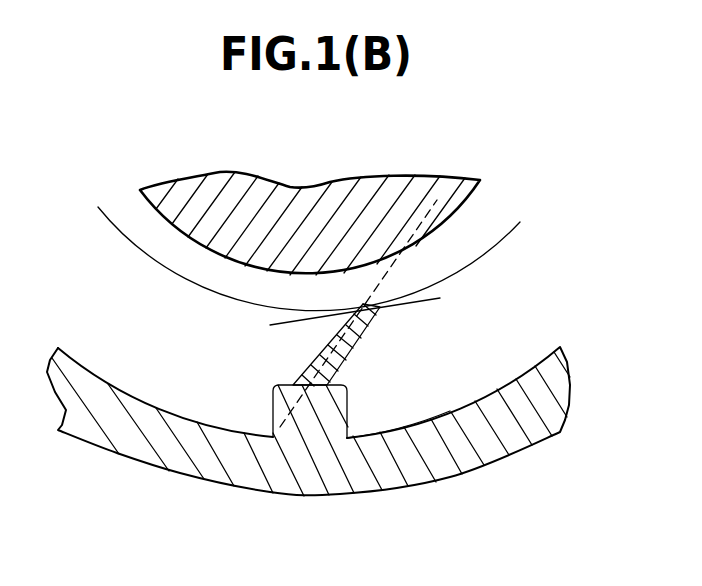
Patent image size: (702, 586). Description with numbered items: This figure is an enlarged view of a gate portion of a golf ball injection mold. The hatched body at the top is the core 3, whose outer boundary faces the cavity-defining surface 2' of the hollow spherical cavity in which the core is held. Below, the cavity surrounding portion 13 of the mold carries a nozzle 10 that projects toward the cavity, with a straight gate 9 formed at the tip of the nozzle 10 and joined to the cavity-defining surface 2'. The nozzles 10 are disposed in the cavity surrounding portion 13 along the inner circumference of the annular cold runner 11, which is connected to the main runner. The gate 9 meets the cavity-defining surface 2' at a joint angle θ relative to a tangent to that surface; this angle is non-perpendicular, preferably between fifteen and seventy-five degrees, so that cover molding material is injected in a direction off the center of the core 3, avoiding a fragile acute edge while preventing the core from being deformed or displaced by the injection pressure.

The core 3 is at (286, 203).
The cavity-defining surface 2' is at (330, 259).
The gate 9 is at (305, 354).
The nozzle 10 is at (273, 412).
The annular cold runner 11 is at (477, 448).
The cavity surrounding portion 13 is at (393, 400).